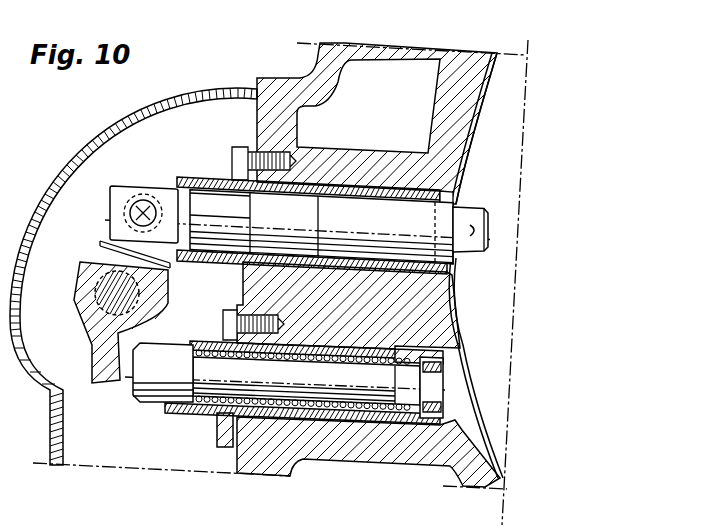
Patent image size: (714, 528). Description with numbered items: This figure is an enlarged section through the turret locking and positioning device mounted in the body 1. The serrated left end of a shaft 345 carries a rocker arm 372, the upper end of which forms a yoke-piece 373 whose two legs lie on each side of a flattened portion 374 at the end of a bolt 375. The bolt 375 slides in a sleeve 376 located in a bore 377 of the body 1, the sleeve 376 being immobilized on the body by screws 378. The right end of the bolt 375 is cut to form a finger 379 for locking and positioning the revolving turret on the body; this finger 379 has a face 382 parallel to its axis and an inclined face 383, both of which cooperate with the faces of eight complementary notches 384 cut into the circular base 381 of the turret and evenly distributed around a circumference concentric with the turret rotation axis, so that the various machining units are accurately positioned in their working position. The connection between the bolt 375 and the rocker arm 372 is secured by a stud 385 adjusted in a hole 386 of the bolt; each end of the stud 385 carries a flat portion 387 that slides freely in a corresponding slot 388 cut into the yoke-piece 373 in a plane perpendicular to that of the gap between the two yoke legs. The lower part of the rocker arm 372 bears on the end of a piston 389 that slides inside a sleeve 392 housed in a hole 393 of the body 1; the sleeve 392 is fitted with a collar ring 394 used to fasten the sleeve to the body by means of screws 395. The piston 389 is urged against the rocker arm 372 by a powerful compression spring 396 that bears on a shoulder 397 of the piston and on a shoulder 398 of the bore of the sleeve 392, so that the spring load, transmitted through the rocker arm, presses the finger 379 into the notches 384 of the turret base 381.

The body 1 is at (440, 148).
The shaft 345 is at (98, 284).
The rocker arm 372 is at (98, 318).
The yoke-piece 373 is at (102, 242).
The flattened portion 374 is at (152, 188).
The bolt 375 is at (372, 206).
The sleeve 376 is at (347, 206).
The bore 377 is at (380, 203).
The screws 378 is at (296, 131).
The finger 379 is at (478, 221).
The circular base 381 is at (480, 393).
The face parallel to its axis 382 is at (471, 212).
The inclined face 383 is at (470, 258).
The complementary notches 384 is at (478, 232).
The stud 385 is at (147, 192).
The hole 386 is at (160, 212).
The flat portion 387 is at (128, 206).
The slot 388 is at (172, 212).
The piston 389 is at (285, 381).
The sleeve 392 is at (449, 316).
The hole 393 is at (447, 361).
The collar ring 394 is at (217, 434).
The screw 395 is at (226, 324).
The compression spring 396 is at (260, 354).
The shoulder 397 is at (208, 369).
The shoulder 398 is at (380, 418).